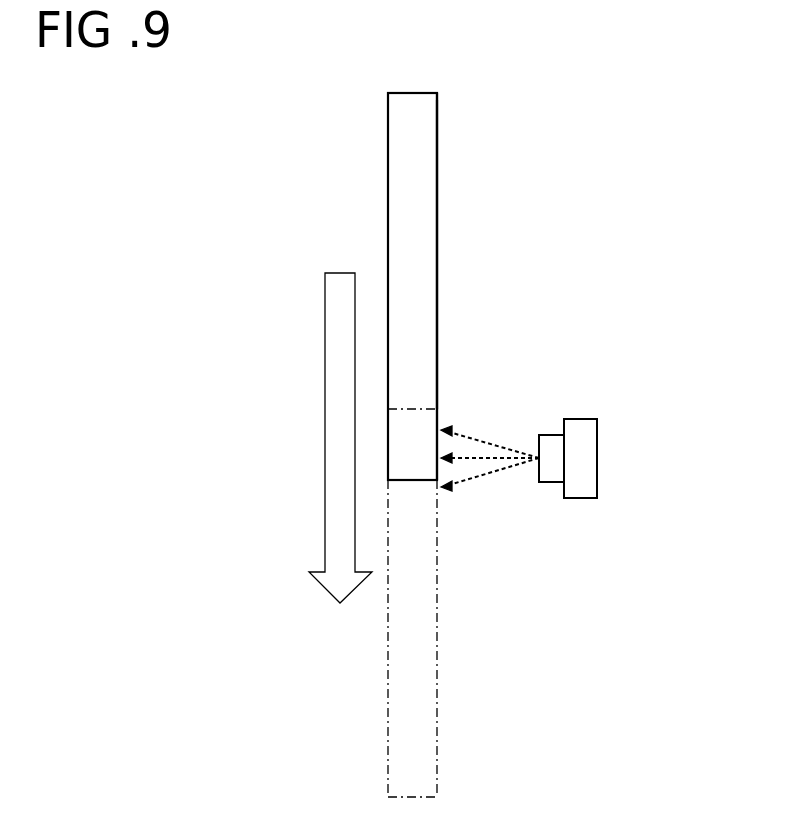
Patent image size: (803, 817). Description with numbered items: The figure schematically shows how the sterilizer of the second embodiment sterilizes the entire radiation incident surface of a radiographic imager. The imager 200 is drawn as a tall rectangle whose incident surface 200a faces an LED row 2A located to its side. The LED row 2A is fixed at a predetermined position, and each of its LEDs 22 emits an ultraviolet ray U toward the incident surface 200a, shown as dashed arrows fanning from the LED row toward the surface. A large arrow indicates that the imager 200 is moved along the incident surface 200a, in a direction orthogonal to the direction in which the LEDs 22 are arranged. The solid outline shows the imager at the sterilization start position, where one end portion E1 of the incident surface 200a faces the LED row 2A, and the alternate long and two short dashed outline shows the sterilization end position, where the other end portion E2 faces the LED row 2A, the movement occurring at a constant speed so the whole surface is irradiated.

The imager 200 is at (380, 133).
The incident surface 200a is at (437, 273).
The LED row 2A is at (599, 457).
The LED 22 is at (550, 482).
The ultraviolet ray U is at (482, 477).
The one end portion E1 is at (437, 423).
The other end portion E2 is at (437, 148).